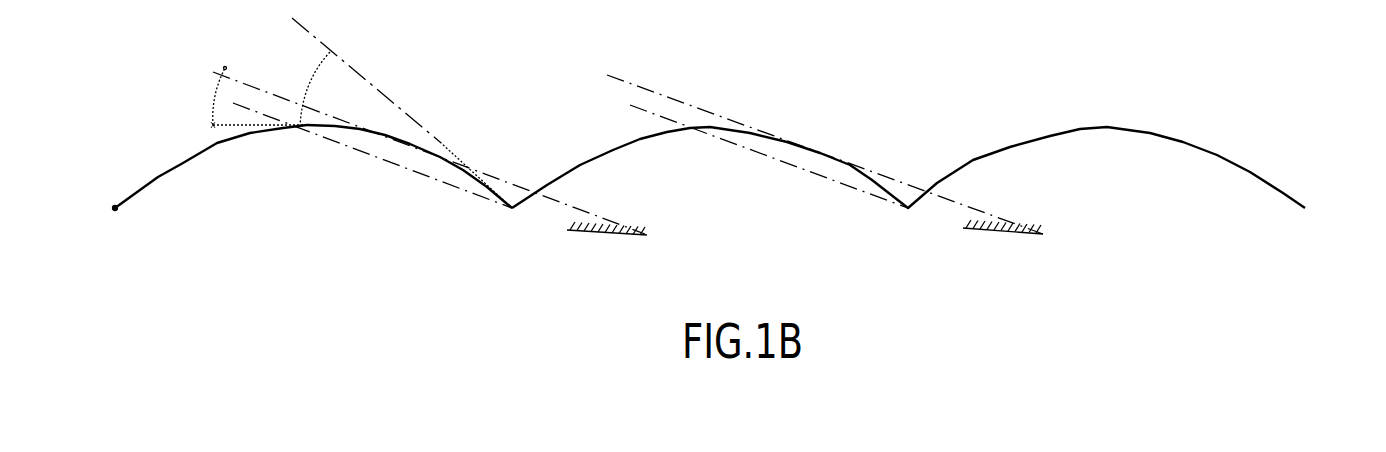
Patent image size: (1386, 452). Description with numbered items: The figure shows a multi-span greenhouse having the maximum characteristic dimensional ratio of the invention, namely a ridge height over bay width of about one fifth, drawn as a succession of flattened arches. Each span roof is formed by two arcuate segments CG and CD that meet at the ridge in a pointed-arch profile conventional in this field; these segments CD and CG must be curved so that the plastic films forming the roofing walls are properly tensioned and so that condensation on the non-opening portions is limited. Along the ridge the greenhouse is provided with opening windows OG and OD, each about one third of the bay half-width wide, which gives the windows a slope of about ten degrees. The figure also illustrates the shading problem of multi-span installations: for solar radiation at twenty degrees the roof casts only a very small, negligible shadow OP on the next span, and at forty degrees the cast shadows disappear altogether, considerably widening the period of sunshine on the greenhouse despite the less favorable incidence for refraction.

The arcuate segment CG is at (186, 162).
The opening window OG is at (281, 131).
The opening window OD is at (355, 141).
The arcuate segment CD is at (463, 163).
The cast shadow OP is at (604, 234).